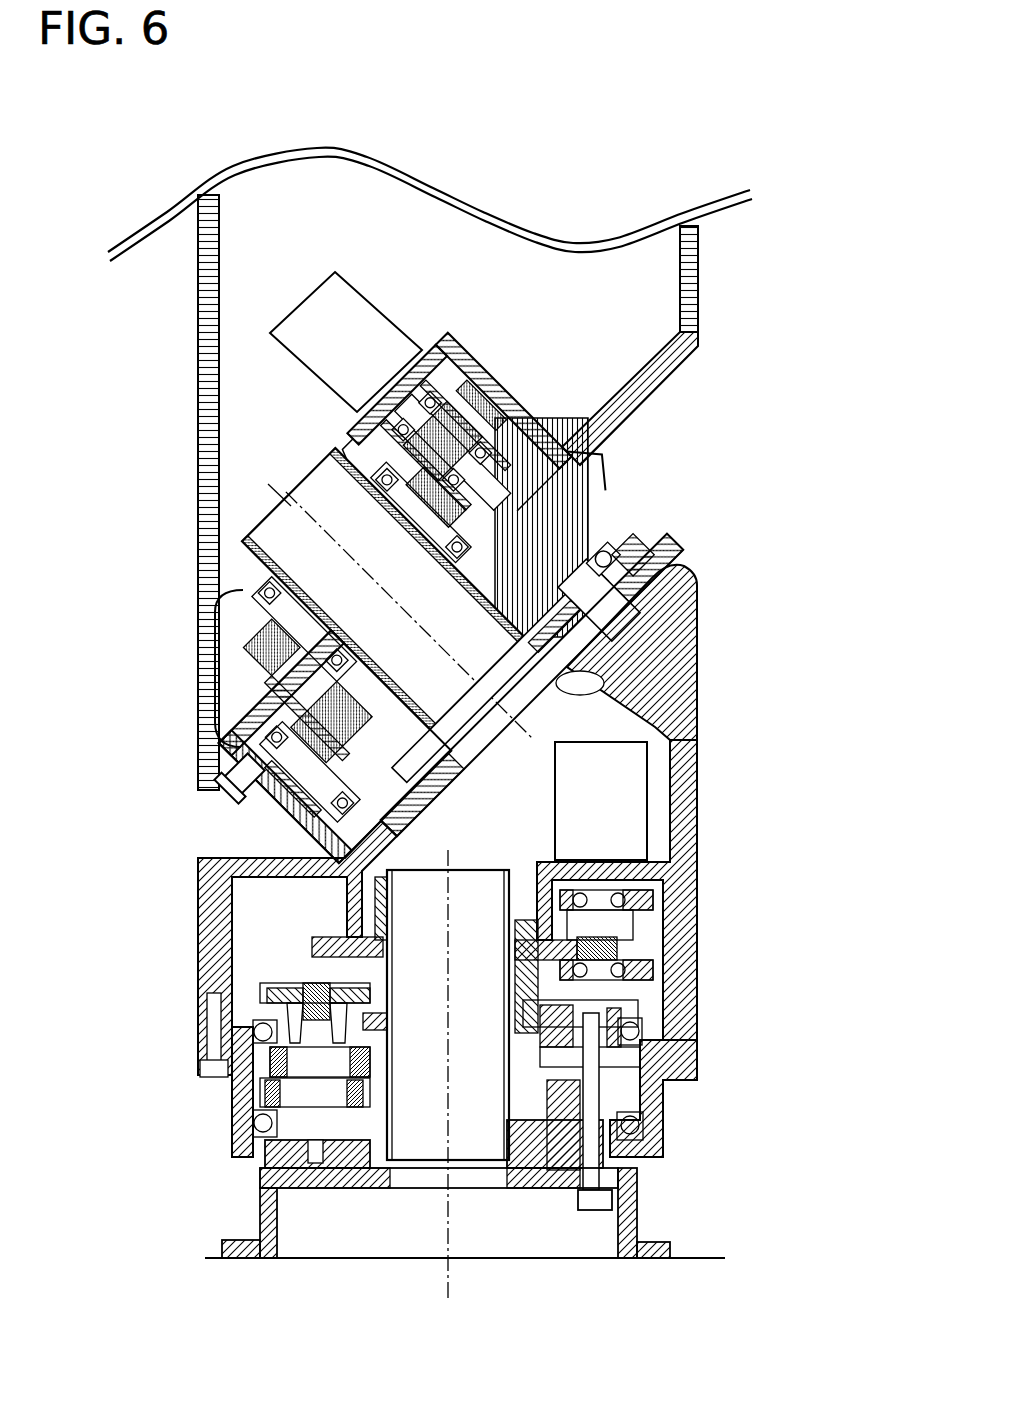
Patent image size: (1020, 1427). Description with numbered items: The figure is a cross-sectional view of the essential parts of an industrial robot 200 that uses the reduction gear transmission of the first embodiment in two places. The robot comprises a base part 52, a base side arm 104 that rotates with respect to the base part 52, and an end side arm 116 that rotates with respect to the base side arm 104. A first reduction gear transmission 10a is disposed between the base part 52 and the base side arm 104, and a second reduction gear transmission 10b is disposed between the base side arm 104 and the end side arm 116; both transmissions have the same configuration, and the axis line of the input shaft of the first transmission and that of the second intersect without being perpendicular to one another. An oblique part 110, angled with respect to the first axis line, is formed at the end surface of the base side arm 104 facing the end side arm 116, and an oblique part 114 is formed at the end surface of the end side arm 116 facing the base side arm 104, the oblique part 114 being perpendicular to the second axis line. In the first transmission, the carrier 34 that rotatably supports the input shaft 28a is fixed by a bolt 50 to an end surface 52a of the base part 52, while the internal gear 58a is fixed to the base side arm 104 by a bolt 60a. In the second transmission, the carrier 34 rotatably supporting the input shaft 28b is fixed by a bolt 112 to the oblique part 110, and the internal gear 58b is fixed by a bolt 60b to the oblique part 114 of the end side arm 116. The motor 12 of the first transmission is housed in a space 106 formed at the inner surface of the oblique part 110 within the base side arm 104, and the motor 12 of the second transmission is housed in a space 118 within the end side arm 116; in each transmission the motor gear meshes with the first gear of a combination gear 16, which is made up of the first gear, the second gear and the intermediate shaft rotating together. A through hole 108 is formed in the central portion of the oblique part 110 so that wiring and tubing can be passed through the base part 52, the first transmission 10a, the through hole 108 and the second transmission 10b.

The industrial robot 200 is at (630, 170).
The space 118 is at (252, 378).
The end side arm 116 is at (690, 262).
The oblique part 114 is at (685, 360).
The motor 12 is at (305, 325).
The second reduction gear transmission 10b is at (441, 733).
The internal gear 58b is at (478, 460).
The input shaft 28b is at (388, 596).
The bolt 60b is at (324, 756).
The bolt 112 is at (578, 621).
The oblique part 110 is at (603, 559).
The carrier 34 is at (643, 547).
The through hole 108 is at (626, 652).
The space 106 is at (532, 685).
The combination gear 16 is at (527, 863).
The base side arm 104 is at (683, 882).
The first reduction gear transmission 10a is at (446, 1034).
The internal gear 58a is at (680, 1050).
The input shaft 28a is at (360, 968).
The bolt 60a is at (210, 1043).
The end surface 52a is at (655, 1152).
The bolt 50 is at (602, 1200).
The base part 52 is at (636, 1225).